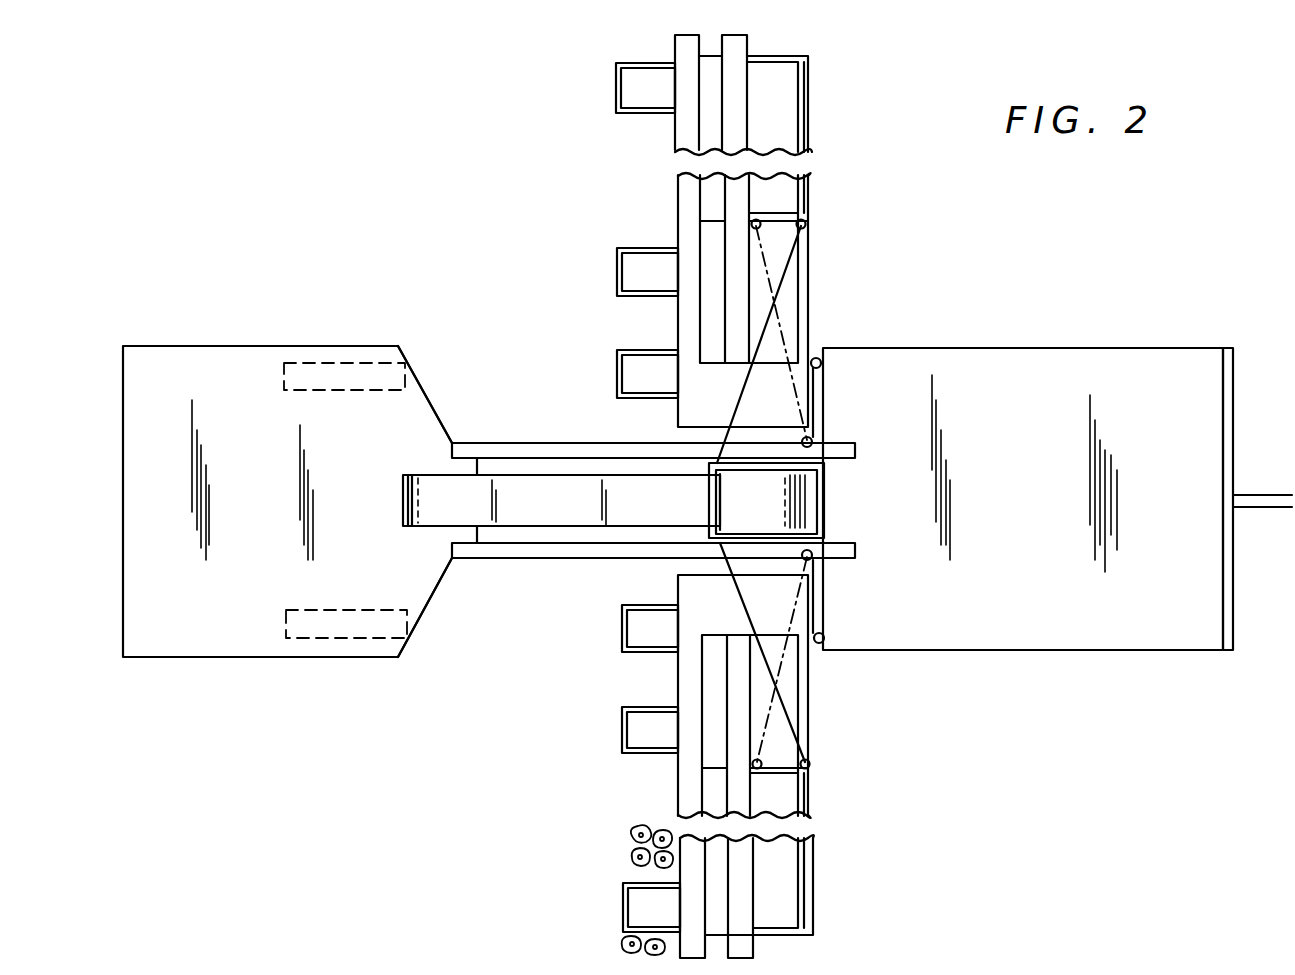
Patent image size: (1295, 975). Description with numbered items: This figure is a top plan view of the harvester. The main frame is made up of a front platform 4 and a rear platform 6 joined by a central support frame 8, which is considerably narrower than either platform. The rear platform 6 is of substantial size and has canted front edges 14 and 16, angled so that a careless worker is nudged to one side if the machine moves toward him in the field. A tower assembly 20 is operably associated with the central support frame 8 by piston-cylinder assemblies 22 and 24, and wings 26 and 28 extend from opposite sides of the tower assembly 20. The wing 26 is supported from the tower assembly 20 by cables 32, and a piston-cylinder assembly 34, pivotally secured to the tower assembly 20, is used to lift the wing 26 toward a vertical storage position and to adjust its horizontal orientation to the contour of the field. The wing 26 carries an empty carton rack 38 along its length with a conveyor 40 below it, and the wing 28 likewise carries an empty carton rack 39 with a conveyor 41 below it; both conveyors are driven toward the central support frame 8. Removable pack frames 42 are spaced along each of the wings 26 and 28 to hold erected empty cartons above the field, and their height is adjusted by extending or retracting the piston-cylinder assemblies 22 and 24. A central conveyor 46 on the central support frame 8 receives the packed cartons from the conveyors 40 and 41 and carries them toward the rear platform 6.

The front platform 4 is at (1030, 372).
The rear platform 6 is at (142, 460).
The central support frame 8 is at (518, 444).
The canted front edge 14 is at (430, 585).
The canted front edge 16 is at (428, 400).
The tower assembly 20 is at (826, 501).
The piston-cylinder assembly 22 is at (822, 363).
The piston-cylinder assembly 24 is at (826, 636).
The wing 26 is at (810, 191).
The wing 28 is at (810, 760).
The cables 32 is at (788, 262).
The piston-cylinder assembly 34 is at (812, 441).
The empty carton rack 38 is at (745, 51).
The empty carton rack 39 is at (755, 943).
The conveyor 40 is at (790, 100).
The conveyor 41 is at (795, 877).
The pack frames 42 is at (630, 85).
The central conveyor 46 is at (413, 497).